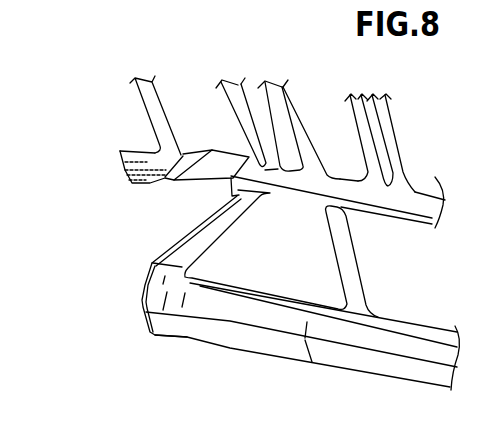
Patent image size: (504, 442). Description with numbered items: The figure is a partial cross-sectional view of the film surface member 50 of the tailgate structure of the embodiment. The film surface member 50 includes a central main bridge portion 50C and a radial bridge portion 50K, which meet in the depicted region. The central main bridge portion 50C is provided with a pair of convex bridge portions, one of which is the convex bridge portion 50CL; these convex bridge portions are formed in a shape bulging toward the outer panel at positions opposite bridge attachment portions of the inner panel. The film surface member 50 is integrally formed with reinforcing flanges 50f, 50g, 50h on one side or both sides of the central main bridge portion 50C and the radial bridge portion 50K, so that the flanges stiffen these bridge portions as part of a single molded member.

The film surface member 50 is at (375, 385).
The central main bridge portion 50C is at (130, 151).
The convex bridge portion 50CL is at (227, 163).
The reinforcing flange 50f is at (122, 153).
The reinforcing flange 50g is at (152, 184).
The reinforcing flange 50h is at (150, 236).
The radial bridge portion 50K is at (203, 237).